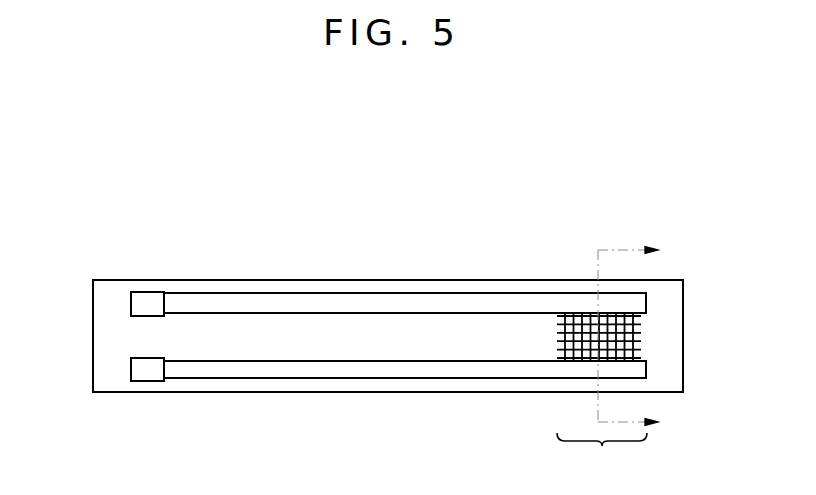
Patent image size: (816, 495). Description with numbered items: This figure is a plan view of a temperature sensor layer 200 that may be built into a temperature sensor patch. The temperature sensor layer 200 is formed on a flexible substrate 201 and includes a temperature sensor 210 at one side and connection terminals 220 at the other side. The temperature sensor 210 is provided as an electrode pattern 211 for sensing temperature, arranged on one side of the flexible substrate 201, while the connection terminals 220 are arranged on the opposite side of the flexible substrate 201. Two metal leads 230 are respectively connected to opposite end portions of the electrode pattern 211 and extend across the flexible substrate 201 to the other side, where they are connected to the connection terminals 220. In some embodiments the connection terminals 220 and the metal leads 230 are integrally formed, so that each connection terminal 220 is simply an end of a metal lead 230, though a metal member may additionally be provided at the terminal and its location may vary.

The temperature sensor layer 200 is at (615, 213).
The flexible substrate 201 is at (678, 368).
The temperature sensor 210 is at (602, 454).
The electrode pattern 211 is at (633, 320).
The connection terminal 220 is at (133, 370).
The metal lead 230 is at (432, 308).